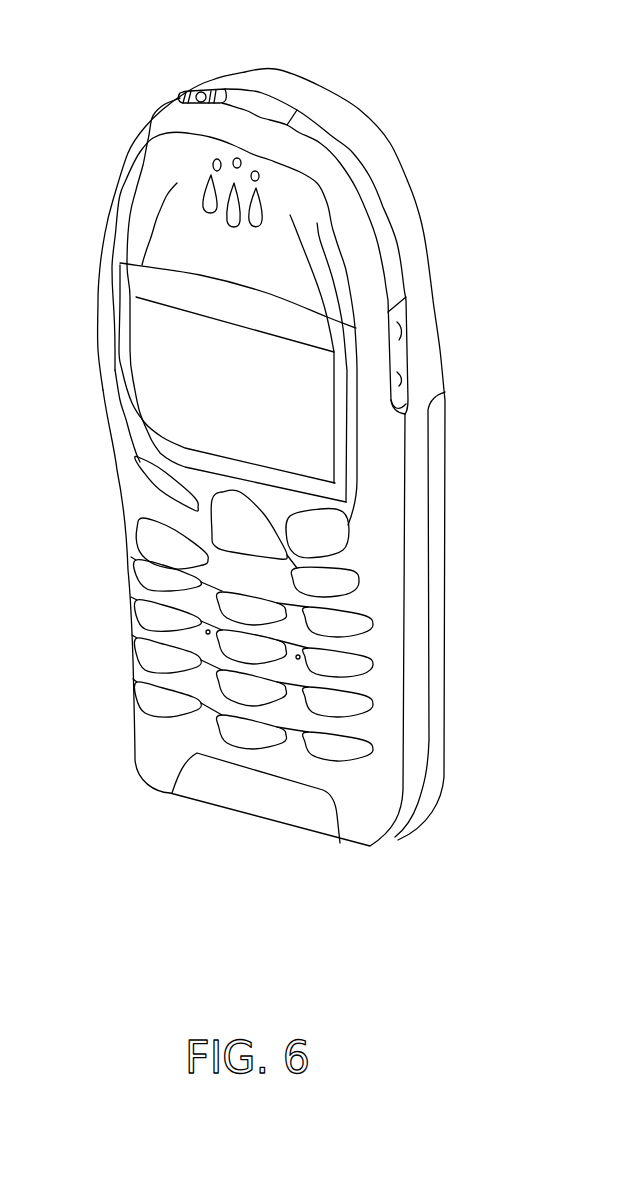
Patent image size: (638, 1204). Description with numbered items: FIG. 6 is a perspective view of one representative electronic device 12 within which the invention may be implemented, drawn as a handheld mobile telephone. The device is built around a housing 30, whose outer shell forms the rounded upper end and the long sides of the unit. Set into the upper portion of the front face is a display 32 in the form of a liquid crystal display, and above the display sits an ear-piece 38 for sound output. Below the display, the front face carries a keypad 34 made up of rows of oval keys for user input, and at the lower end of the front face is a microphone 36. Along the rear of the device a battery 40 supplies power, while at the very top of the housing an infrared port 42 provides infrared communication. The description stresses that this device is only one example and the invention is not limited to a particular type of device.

The electronic device 12 is at (384, 81).
The housing 30 is at (410, 227).
The display 32 is at (315, 430).
The keypad 34 is at (340, 753).
The microphone 36 is at (197, 787).
The ear-piece 38 is at (227, 187).
The battery 40 is at (438, 731).
The infrared port 42 is at (262, 93).